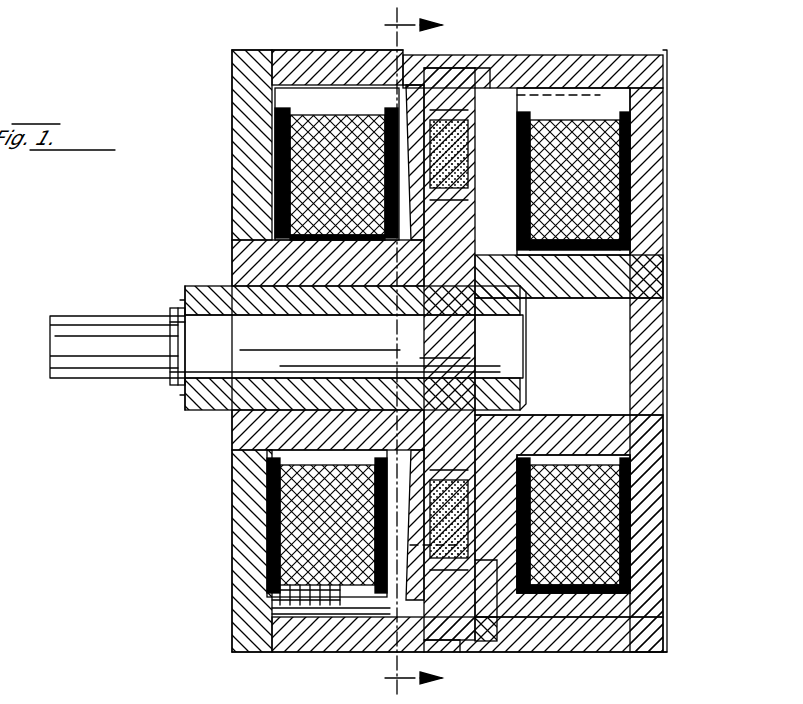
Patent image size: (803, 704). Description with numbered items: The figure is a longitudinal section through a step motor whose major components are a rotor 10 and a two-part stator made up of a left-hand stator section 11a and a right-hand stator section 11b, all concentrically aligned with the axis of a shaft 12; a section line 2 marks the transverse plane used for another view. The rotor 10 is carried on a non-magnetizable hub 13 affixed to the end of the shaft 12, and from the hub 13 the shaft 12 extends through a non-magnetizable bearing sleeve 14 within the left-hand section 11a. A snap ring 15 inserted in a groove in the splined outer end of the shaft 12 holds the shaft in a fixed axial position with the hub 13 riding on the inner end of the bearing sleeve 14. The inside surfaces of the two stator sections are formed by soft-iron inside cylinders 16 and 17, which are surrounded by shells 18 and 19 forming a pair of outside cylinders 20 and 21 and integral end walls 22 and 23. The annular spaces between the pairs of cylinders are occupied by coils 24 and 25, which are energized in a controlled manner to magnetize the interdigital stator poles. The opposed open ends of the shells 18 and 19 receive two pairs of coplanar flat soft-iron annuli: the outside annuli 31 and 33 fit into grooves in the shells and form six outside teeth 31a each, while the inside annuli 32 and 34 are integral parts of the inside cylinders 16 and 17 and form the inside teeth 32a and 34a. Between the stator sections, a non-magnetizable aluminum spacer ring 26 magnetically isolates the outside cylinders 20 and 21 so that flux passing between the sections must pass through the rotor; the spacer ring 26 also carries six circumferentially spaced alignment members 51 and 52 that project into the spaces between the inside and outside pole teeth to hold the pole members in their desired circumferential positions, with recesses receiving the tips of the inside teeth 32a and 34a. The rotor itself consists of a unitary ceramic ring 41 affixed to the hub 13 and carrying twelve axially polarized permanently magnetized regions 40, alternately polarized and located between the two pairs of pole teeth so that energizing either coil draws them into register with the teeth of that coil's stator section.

The section line 2- 2 is at (398, 355).
The rotor 10 is at (445, 120).
The left-hand stator section 11a is at (240, 85).
The right-hand stator section 11b is at (668, 62).
The shaft 12 is at (520, 353).
The hub 13 is at (530, 396).
The bearing sleeve 14 is at (203, 413).
The snap ring 15 is at (178, 310).
The inside cylinder 16 is at (236, 262).
The inside cylinder 17 is at (660, 292).
The shell 18 is at (212, 536).
The shell 19 is at (680, 513).
The outside cylinder 20 is at (258, 48).
The outside cylinder 21 is at (598, 56).
The end wall 22 is at (238, 193).
The end wall 23 is at (665, 190).
The coil 24 is at (336, 173).
The coil 25 is at (573, 171).
The spacer ring 26 is at (450, 655).
The outside annulus 31 is at (418, 583).
The outside pole teeth 31a is at (400, 115).
The inside annulus 32 is at (422, 520).
The inside pole teeth 32a is at (383, 200).
The outside annulus 33 is at (490, 640).
The inside annulus 34 is at (490, 497).
The inside pole teeth 34a is at (495, 200).
The permanently magnetized regions 40 is at (505, 125).
The ceramic ring 41 is at (482, 492).
The alignment member 51 is at (348, 46).
The alignment member 52 is at (492, 92).